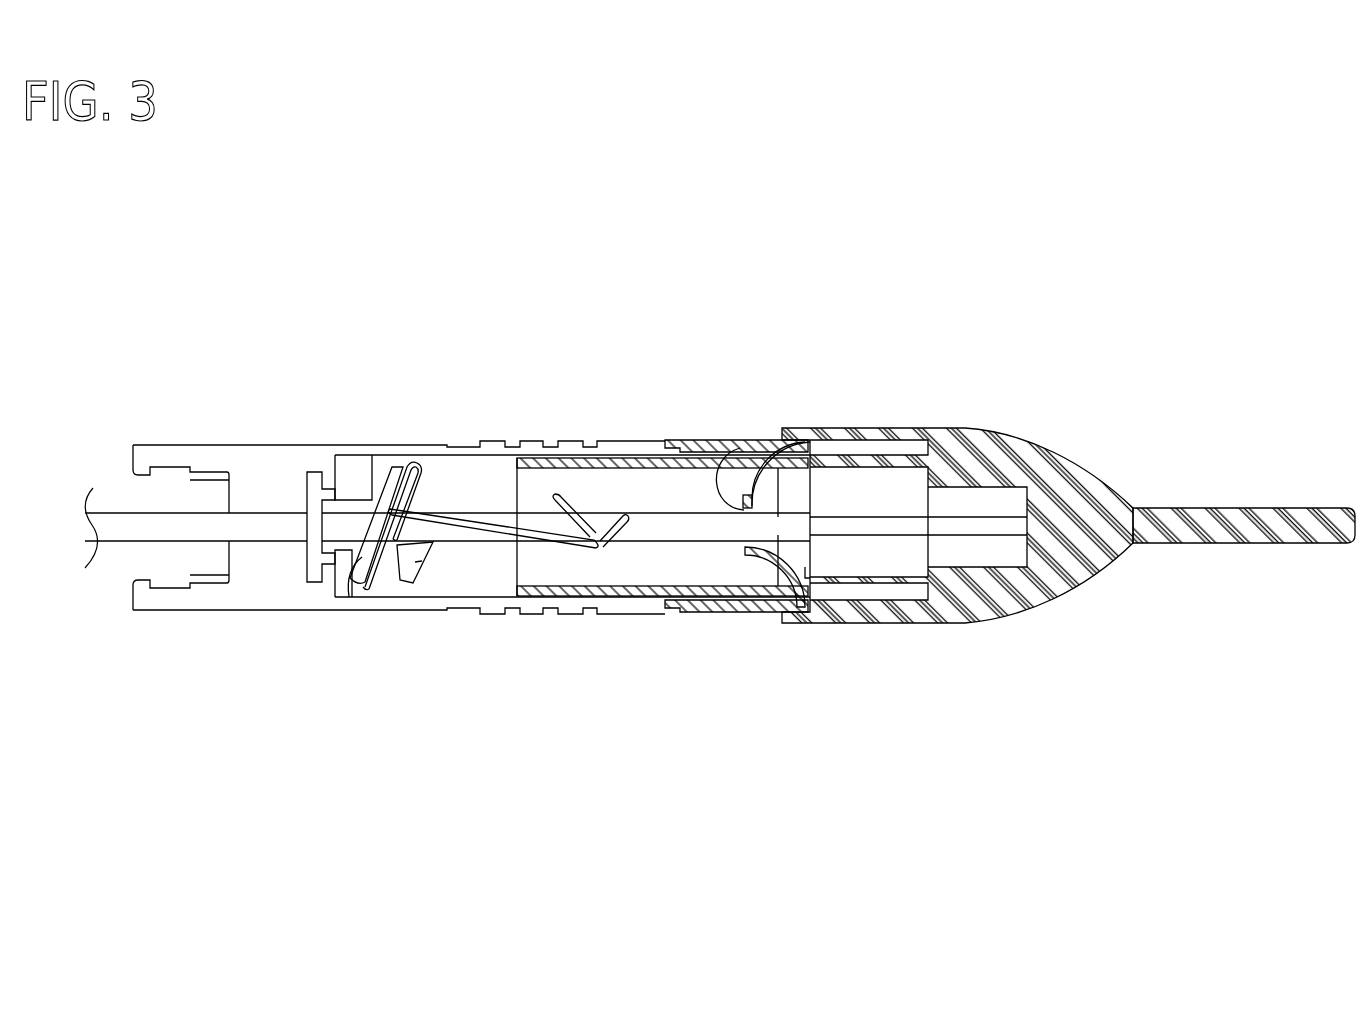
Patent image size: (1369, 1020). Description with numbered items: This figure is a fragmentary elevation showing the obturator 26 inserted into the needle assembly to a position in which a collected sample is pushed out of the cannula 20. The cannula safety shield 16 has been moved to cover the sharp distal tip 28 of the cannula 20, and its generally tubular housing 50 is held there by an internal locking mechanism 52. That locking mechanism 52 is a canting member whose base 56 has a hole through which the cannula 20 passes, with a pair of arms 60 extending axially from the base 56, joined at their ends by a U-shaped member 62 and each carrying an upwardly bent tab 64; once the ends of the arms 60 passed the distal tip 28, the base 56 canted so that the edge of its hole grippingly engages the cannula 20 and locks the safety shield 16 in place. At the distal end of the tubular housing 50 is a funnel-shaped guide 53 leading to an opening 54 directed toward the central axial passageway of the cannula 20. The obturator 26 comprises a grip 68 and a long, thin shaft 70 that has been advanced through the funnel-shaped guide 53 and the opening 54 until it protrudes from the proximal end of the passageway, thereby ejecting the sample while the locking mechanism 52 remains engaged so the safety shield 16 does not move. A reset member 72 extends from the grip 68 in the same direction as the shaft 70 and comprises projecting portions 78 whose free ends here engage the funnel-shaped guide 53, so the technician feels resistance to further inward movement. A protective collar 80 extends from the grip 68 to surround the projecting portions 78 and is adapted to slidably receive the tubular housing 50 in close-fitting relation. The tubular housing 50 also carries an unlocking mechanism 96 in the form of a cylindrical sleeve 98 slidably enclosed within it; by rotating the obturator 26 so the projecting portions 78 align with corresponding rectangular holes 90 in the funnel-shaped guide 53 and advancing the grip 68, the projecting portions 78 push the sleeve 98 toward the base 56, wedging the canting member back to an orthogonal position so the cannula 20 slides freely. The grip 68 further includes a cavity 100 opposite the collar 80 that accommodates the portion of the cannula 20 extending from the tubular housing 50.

The cannula safety shield 16 is at (350, 355).
The cannula 20 is at (120, 533).
The obturator 26 is at (1032, 698).
The distal tip 28 is at (611, 503).
The tubular housing 50 is at (230, 445).
The locking mechanism 52 is at (530, 550).
The funnel-shaped guide 53 is at (774, 488).
The opening 54 is at (722, 464).
The base 56 is at (350, 570).
The arms 60 is at (460, 513).
The U-shaped member 62 is at (559, 493).
The bent tab 64 is at (613, 597).
The grip 68 is at (1258, 508).
The shaft 70 is at (624, 532).
The reset member 72 is at (901, 600).
The projecting portions 78 is at (858, 452).
The protective collar 80 is at (903, 428).
The holes 90 is at (797, 441).
The unlocking mechanism 96 is at (688, 613).
The sleeve 98 is at (533, 596).
The cavity 100 is at (984, 500).